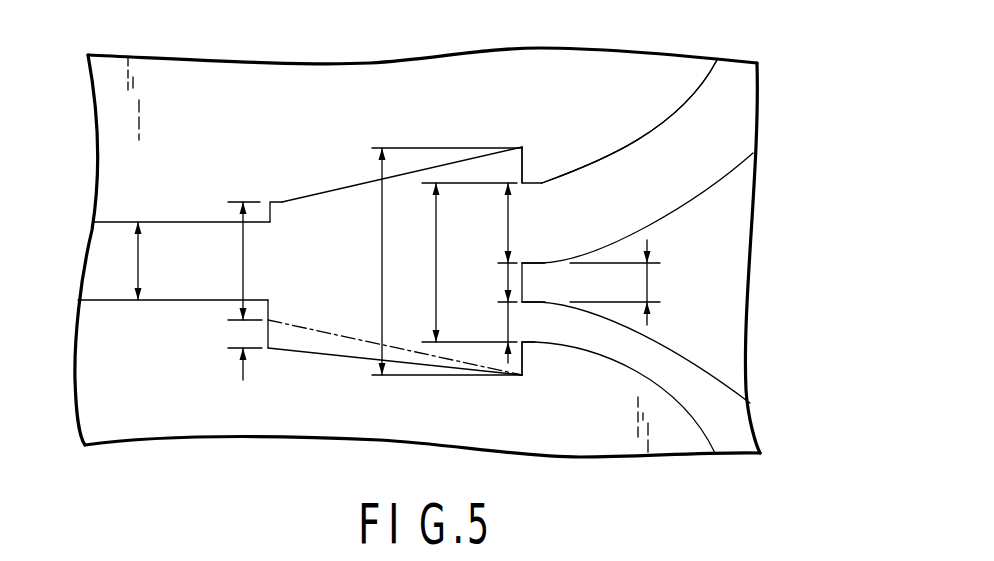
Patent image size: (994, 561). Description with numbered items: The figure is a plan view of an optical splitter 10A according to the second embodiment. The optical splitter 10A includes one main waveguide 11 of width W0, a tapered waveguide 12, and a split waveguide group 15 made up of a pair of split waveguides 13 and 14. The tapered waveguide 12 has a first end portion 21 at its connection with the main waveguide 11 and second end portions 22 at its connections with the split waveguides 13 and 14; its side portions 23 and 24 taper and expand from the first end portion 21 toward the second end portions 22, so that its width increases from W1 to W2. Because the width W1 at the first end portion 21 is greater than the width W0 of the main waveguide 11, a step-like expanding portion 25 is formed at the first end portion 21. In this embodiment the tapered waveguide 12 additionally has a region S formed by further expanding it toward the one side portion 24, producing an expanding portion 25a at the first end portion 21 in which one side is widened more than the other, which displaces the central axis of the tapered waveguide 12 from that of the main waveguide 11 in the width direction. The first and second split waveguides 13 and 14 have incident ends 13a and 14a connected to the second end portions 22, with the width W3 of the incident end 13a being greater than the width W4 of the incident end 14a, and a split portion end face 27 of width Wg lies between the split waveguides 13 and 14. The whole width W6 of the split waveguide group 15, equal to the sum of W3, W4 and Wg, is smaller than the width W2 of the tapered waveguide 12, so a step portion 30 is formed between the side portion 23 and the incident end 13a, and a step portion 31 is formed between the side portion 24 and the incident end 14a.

The optical splitter 10A is at (793, 208).
The main waveguide 11 is at (103, 262).
The tapered waveguide 12 is at (377, 248).
The first split waveguide 13 is at (674, 134).
The incident end of first split waveguide 13a is at (528, 225).
The second split waveguide 14 is at (670, 379).
The incident end of second split waveguide 14a is at (523, 318).
The split waveguide group 15 is at (647, 113).
The first end portion 21 is at (377, 316).
The second end portions 22 is at (508, 378).
The side portion 23 is at (318, 200).
The side portion 24 is at (355, 352).
The step-like expanding portion 25 is at (277, 212).
The expanding portion 25a is at (267, 340).
The split portion end face 27 is at (517, 270).
The step portion 30 is at (532, 165).
The step portion 31 is at (523, 360).
The region S is at (312, 343).
The width of main waveguide W0 is at (142, 262).
The width of tapered waveguide at first end portion W1 is at (245, 242).
The width of tapered waveguide at second end portions W2 is at (378, 305).
The width of incident end of first split waveguide W3 is at (505, 225).
The width of incident end of second split waveguide W4 is at (508, 315).
The whole width of split waveguide group W6 is at (435, 278).
The width of split portion end face Wg is at (650, 283).